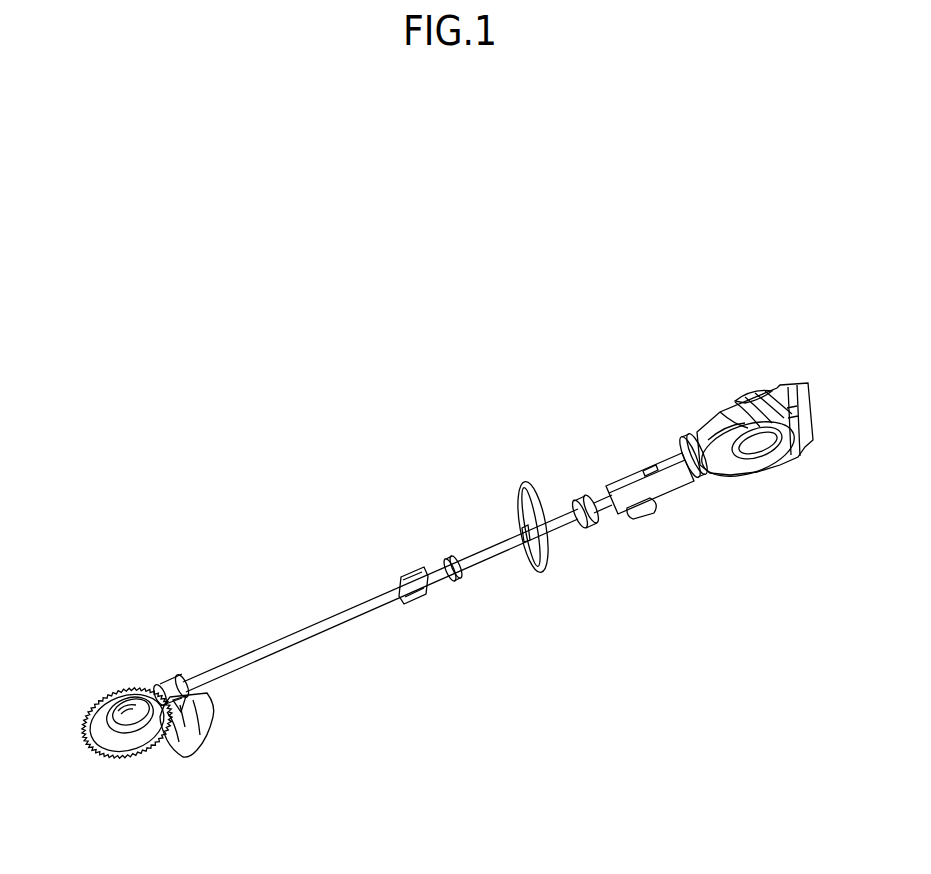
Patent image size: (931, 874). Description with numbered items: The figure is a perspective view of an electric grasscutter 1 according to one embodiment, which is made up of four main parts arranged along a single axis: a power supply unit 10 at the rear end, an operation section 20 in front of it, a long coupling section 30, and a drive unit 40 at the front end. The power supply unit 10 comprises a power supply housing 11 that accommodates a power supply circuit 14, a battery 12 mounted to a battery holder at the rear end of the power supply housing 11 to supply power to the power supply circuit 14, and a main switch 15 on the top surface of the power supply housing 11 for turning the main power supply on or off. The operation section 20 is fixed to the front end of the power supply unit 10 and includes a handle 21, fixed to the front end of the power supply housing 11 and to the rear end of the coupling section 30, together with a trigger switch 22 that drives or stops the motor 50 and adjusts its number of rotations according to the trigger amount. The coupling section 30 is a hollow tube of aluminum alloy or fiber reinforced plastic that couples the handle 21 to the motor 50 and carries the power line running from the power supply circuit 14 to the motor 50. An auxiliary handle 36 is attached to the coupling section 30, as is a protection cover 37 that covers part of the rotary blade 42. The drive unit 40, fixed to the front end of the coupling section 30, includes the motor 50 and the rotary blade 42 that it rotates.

The electric grasscutter 1 is at (100, 250).
The power supply unit 10 is at (762, 270).
The power supply housing 11 is at (722, 482).
The battery 12 is at (806, 450).
The power supply circuit 14 is at (717, 410).
The main switch 15 is at (757, 390).
The operation section 20 is at (651, 319).
The handle 21 is at (676, 494).
The trigger switch 22 is at (643, 514).
The coupling section 30 is at (558, 354).
The auxiliary handle 36 is at (541, 577).
The protection cover 37 is at (203, 749).
The drive unit 40 is at (141, 529).
The rotary blade 42 is at (108, 742).
The motor 50 is at (138, 724).